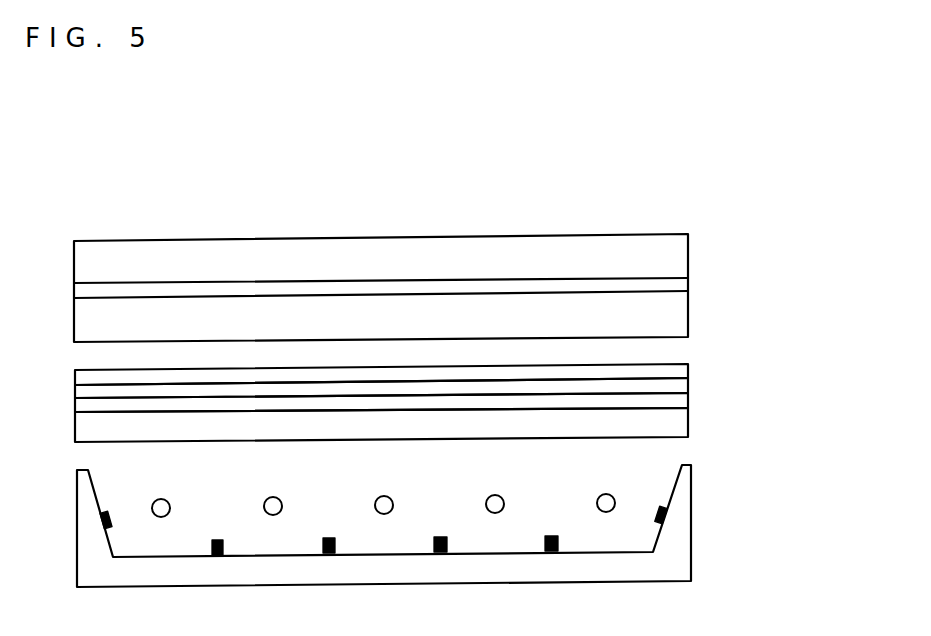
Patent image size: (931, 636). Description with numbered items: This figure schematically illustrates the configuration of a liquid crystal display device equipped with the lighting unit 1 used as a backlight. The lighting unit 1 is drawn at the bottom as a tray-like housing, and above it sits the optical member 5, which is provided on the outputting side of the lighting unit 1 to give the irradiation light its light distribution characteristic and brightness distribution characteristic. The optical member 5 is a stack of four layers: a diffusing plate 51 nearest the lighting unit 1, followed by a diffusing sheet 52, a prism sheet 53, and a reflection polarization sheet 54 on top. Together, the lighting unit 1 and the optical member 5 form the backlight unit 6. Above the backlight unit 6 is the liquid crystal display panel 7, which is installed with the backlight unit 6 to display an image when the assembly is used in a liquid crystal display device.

The lighting unit 1 is at (712, 518).
The optical member 5 is at (775, 333).
The backlight unit 6 is at (823, 360).
The liquid crystal display panel 7 is at (708, 279).
The diffusing plate 51 is at (688, 425).
The diffusing sheet 52 is at (688, 400).
The prism sheet 53 is at (688, 386).
The reflection polarization sheet 54 is at (688, 369).